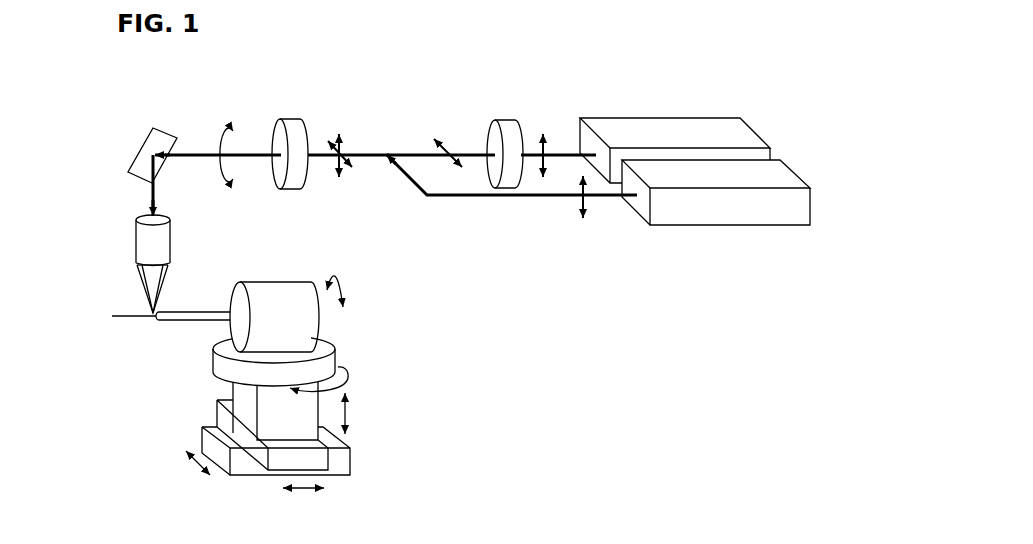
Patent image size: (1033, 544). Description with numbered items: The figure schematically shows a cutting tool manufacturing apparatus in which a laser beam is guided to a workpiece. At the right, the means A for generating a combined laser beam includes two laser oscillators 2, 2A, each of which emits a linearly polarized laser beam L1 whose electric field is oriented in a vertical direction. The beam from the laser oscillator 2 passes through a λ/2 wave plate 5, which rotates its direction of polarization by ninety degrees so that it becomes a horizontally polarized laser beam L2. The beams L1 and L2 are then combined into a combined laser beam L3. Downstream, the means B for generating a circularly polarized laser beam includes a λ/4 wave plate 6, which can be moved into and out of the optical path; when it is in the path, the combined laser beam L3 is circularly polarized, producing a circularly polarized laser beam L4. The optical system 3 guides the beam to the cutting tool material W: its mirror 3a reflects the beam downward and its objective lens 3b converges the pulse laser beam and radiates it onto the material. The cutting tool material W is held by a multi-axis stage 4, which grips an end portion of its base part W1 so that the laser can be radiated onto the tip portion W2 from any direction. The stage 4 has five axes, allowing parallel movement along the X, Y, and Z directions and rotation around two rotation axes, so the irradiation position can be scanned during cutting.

The means for generating combined laser beam A is at (665, 110).
The laser oscillator 2 is at (755, 130).
The laser oscillator 2A is at (782, 167).
The linearly polarized laser beam L1 is at (556, 150).
The λ/2 wave plate 5 is at (503, 118).
The linearly polarized laser beam L2 is at (460, 152).
The combined laser beam L3 is at (368, 150).
The λ/4 wave plate 6 is at (288, 118).
The means for generating circularly polarized laser beam B is at (294, 201).
The circularly polarized laser beam L4 is at (194, 153).
The optical system 3 is at (121, 156).
The mirror 3a is at (153, 128).
The objective lens 3b is at (135, 258).
The cutting tool material W is at (175, 395).
The base part W1 is at (187, 322).
The tip portion W2 is at (128, 318).
The multi-axis stage 4 is at (422, 280).